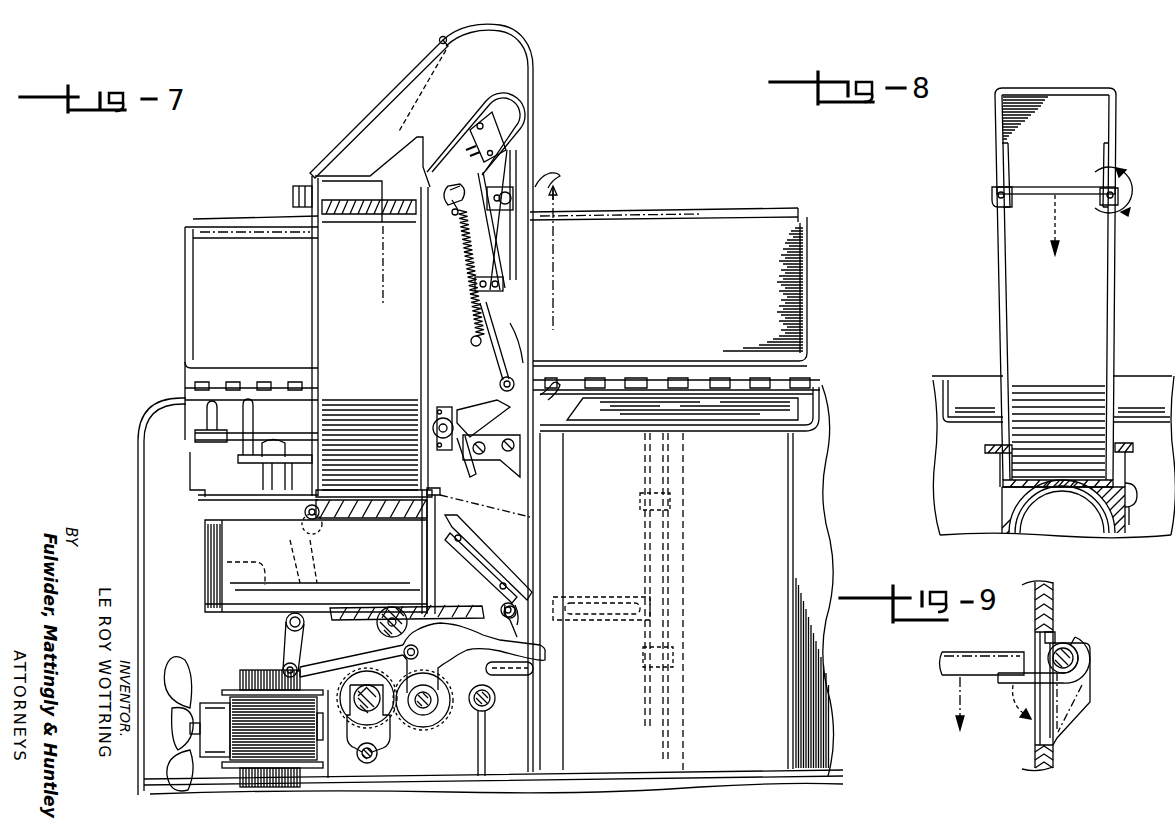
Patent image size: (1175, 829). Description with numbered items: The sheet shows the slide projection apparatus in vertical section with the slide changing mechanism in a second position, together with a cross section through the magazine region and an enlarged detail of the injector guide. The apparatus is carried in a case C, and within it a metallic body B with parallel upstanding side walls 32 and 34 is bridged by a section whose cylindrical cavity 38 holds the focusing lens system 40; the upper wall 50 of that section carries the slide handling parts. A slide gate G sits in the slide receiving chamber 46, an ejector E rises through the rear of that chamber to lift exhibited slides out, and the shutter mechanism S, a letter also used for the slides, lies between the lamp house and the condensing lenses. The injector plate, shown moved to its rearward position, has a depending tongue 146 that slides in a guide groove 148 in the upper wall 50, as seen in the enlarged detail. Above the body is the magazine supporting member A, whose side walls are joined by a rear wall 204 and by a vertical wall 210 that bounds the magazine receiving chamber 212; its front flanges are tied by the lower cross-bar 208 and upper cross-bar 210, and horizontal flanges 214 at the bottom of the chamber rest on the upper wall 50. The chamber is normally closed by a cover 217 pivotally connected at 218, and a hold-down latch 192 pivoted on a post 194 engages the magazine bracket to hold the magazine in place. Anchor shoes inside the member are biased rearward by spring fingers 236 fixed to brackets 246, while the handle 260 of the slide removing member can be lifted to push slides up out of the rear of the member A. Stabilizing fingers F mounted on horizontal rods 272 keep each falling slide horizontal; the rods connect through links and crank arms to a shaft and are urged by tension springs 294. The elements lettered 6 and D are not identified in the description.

In FIG. 7, the pivotal connection 218 is at (441, 37).
In FIG. 7, the rear wall 204 is at (534, 67).
In FIG. 7, the cover 217 is at (378, 106).
In FIG. 7, the upper cross-bar 210 is at (292, 197).
In FIG. 7, the handle 260 is at (540, 185).
In FIG. 7, the horizontal rods 272 is at (446, 207).
In FIG. 7, the brackets 246 is at (488, 288).
In FIG. 7, the magazine receiving chamber 212 is at (313, 297).
In FIG. 7, the tension springs 294 is at (463, 301).
In FIG. 7, the second pair of spring fingers 236 is at (520, 334).
In FIG. 7, the cam 6 is at (447, 423).
In FIG. 7, the hold-down latch 192 is at (272, 463).
In FIG. 7, the post 194 is at (262, 491).
In FIG. 7, the lower cross-bar 208 is at (317, 476).
In FIG. 7, the focusing lens system 40 is at (344, 570).
In FIG. 7, the slide receiving chamber 46 is at (417, 558).
In FIG. 7, the shutter mechanism S is at (662, 539).
In FIG. 7, the stabilizing fingers F is at (284, 623).
In FIG. 7, the ejector E is at (378, 620).
In FIG. 7, the slide gate G is at (512, 627).
In FIG. 7, the magazine supporting member A is at (535, 105).
In FIG. 7, the metallic body B is at (430, 713).
In FIG. 8, the metallic body B is at (1121, 191).
In FIG. 7, the case C is at (380, 716).
In FIG. 7, the pin D is at (377, 753).
In FIG. 8, the side wall 32 is at (1000, 460).
In FIG. 8, the horizontal flanges 214 is at (1012, 496).
In FIG. 8, the upper wall 50 is at (1033, 488).
In FIG. 8, the cylindrical cavity 38 is at (1027, 522).
In FIG. 8, the depending tongue 146 is at (1059, 489).
In FIG. 8, the guide groove 148 is at (1117, 500).
In FIG. 8, the side wall 34 is at (1117, 468).